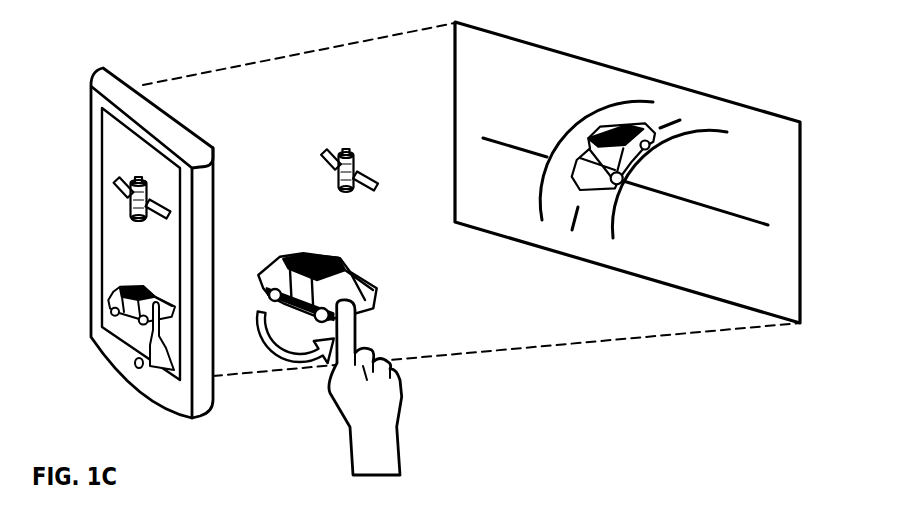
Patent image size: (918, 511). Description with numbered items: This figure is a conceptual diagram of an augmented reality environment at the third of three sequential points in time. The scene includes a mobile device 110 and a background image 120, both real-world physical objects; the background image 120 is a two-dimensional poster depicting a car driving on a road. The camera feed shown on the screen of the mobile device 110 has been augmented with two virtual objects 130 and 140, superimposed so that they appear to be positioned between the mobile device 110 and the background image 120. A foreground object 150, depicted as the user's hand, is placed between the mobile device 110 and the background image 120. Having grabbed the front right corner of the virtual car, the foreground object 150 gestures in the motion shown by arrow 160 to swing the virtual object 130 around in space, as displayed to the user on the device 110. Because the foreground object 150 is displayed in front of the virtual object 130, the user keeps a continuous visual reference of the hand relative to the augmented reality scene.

The mobile device 110 is at (105, 69).
The background image 120 is at (800, 122).
The virtual object 130 is at (118, 290).
The virtual object 140 is at (118, 182).
The foreground object 150 is at (400, 470).
The arrow 160 is at (278, 353).